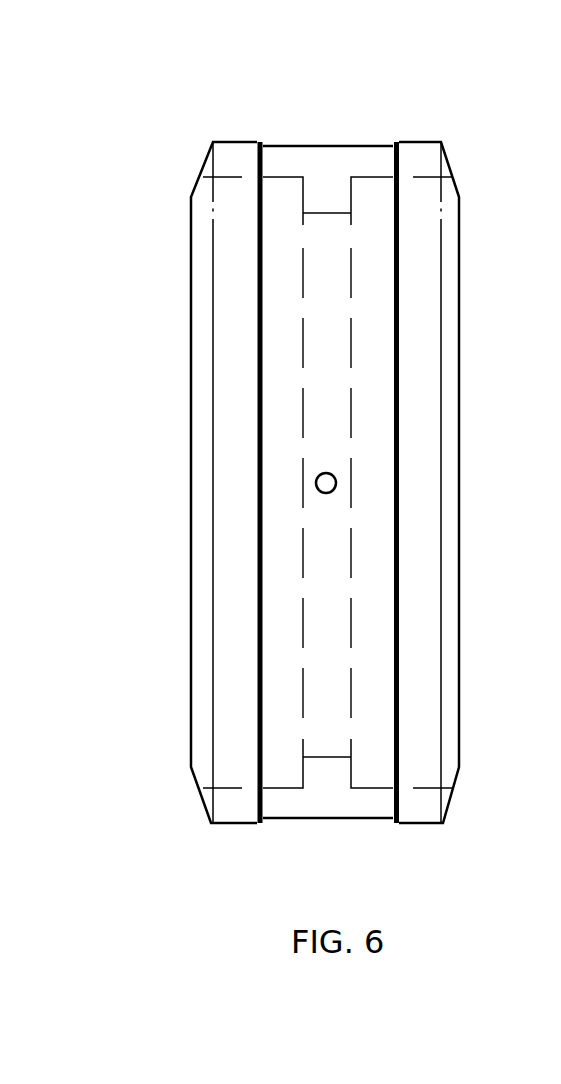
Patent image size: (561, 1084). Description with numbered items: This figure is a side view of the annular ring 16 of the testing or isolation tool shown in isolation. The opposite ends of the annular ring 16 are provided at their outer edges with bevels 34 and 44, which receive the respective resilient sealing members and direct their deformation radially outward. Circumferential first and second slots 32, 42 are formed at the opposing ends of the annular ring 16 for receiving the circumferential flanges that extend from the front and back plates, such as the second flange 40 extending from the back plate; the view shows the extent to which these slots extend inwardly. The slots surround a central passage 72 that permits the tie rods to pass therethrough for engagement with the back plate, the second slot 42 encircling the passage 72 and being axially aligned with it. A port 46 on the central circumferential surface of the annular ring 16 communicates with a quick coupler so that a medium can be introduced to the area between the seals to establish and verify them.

The annular ring 16 is at (353, 822).
The first slot 32 is at (277, 198).
The bevel 34 is at (200, 177).
The second flange 40 is at (553, 610).
The second slot 42 is at (365, 198).
The bevel 44 is at (453, 177).
The port 46 is at (335, 477).
The central passage 72 is at (332, 322).